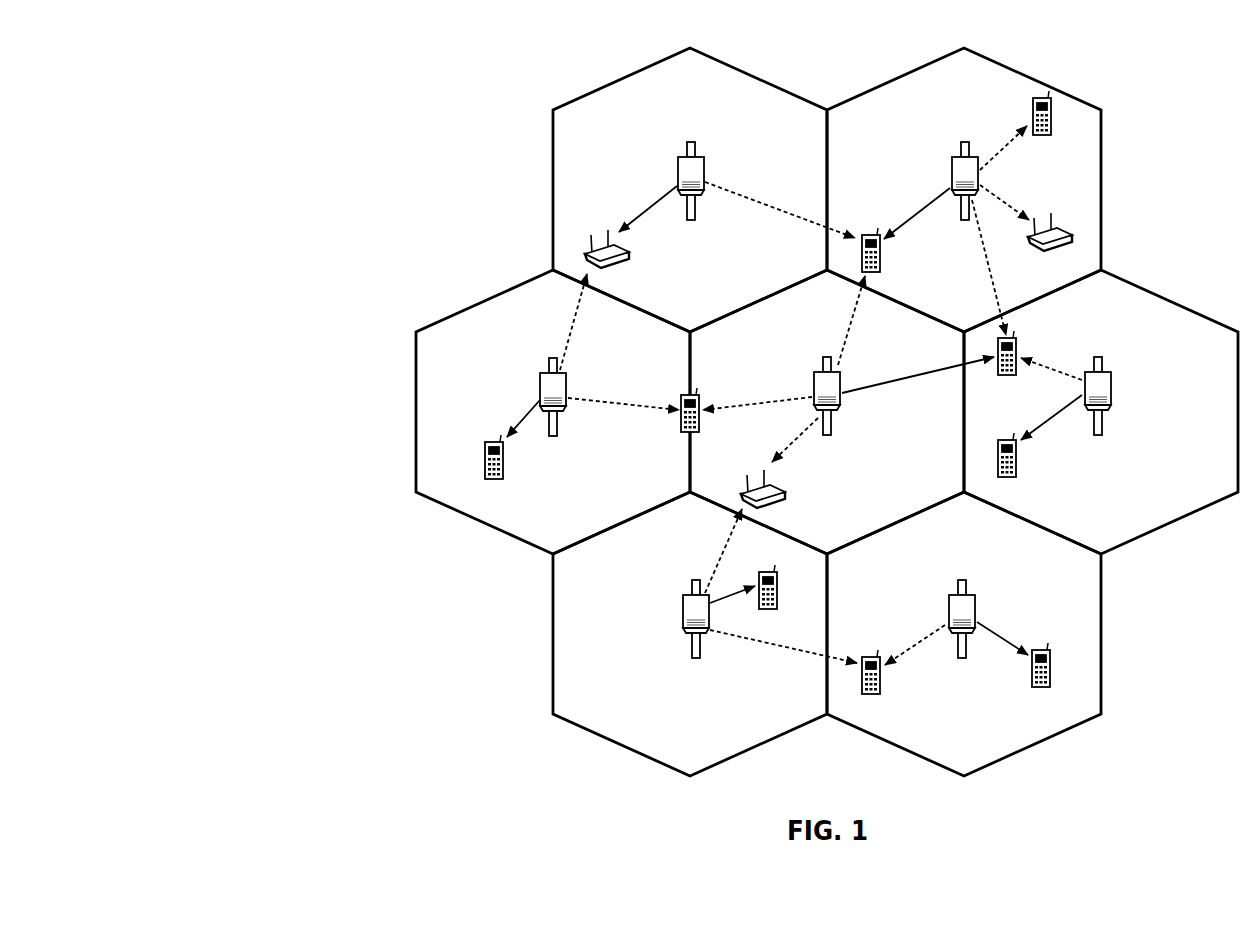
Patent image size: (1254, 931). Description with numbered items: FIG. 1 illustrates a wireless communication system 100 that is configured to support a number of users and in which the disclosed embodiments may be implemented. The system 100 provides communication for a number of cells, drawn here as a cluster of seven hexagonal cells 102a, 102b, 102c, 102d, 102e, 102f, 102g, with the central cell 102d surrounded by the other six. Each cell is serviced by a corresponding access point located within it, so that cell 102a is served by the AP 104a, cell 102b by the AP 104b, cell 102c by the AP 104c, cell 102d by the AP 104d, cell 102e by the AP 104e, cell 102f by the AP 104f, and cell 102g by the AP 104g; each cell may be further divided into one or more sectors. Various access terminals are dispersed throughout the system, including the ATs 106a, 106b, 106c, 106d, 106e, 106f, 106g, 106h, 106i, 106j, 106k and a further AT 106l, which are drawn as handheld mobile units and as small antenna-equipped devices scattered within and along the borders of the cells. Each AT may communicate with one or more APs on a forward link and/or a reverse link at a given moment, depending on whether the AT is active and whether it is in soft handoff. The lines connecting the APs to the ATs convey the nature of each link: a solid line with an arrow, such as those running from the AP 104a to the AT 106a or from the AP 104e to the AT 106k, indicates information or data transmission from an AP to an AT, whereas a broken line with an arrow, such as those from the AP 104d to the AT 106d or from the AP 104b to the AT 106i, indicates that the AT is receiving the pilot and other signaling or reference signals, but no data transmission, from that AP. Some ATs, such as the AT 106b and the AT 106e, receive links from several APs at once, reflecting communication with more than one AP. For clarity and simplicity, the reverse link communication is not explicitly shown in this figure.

The wireless communication system 100 is at (266, 85).
The cell 102a is at (620, 78).
The cell 102b is at (1016, 76).
The cell 102c is at (496, 298).
The cell 102d is at (848, 306).
The cell 102e is at (1171, 298).
The cell 102f is at (551, 647).
The cell 102g is at (1106, 648).
The AP 104a is at (676, 162).
The AP 104b is at (951, 162).
The AP 104c is at (539, 378).
The AP 104d is at (813, 376).
The AP 104e is at (1112, 380).
The AP 104f is at (681, 599).
The AP 104g is at (947, 602).
The AT 106a is at (631, 252).
The AT 106b is at (864, 234).
The AT 106c is at (484, 458).
The AT 106d is at (681, 402).
The AT 106e is at (1020, 348).
The AT 106f is at (761, 570).
The AT 106g is at (864, 655).
The AT 106h is at (1078, 221).
The AT 106i is at (1033, 108).
The AT 106j is at (786, 490).
The AT 106k is at (999, 442).
The AT 106l is at (1033, 652).